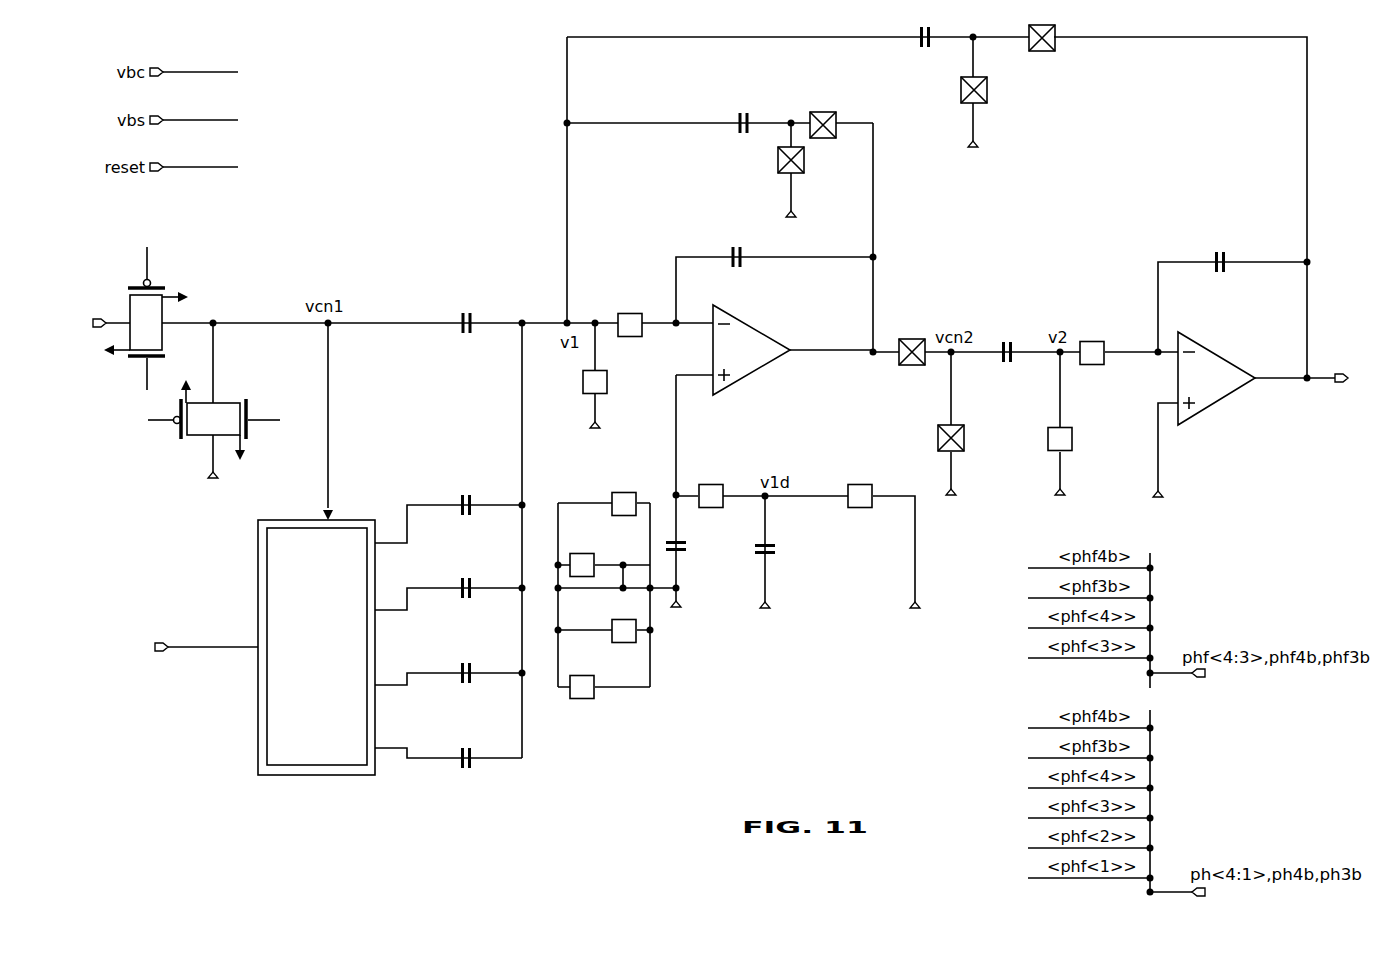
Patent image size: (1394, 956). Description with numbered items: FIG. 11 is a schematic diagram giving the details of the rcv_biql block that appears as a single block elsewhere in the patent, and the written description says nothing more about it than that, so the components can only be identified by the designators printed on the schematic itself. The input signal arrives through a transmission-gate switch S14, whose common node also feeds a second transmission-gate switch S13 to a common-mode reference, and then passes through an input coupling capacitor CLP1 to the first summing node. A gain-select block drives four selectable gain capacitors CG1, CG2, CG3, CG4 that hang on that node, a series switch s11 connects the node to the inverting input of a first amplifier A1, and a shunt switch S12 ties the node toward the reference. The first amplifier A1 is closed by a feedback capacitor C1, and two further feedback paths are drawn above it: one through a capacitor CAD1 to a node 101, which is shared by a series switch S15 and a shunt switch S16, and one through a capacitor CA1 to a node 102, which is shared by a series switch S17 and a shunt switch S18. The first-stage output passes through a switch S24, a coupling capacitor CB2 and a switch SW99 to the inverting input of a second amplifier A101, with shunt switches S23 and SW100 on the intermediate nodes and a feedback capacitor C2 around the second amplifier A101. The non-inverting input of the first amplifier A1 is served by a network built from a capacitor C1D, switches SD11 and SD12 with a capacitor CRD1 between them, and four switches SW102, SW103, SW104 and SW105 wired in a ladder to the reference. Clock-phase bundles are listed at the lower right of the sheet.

The node 101 is at (788, 113).
The node 102 is at (967, 25).
The input switch transistor S14 is at (141, 318).
The switch transistor S13 is at (206, 415).
The coupling capacitor CLP1 is at (465, 312).
The gain capacitor CG1 is at (448, 507).
The gain capacitor CG2 is at (448, 582).
The gain capacitor CG3 is at (448, 662).
The gain capacitor CG4 is at (448, 746).
The switch s11 is at (639, 329).
The switch S12 is at (602, 388).
The amplifier A1 is at (762, 354).
The feedback capacitor C1 is at (776, 273).
The capacitor CAD1 is at (679, 113).
The switch S15 is at (839, 131).
The switch S16 is at (793, 182).
The capacitor CA1 is at (770, 27).
The switch S17 is at (1140, 193).
The switch S18 is at (979, 105).
The feedback capacitor C2 is at (1234, 295).
The switch S24 is at (902, 356).
The coupling capacitor CB2 is at (1009, 342).
The switch SW99 is at (1113, 356).
The switch S23 is at (970, 437).
The switch SW100 is at (1086, 437).
The amplifier A101 is at (1262, 427).
The capacitor C1D is at (685, 590).
The switch SD11 is at (720, 498).
The switch SD12 is at (849, 549).
The capacitor CRD1 is at (781, 566).
The switch SW102 is at (604, 494).
The switch SW103 is at (604, 554).
The switch SW104 is at (604, 645).
The switch SW105 is at (604, 702).